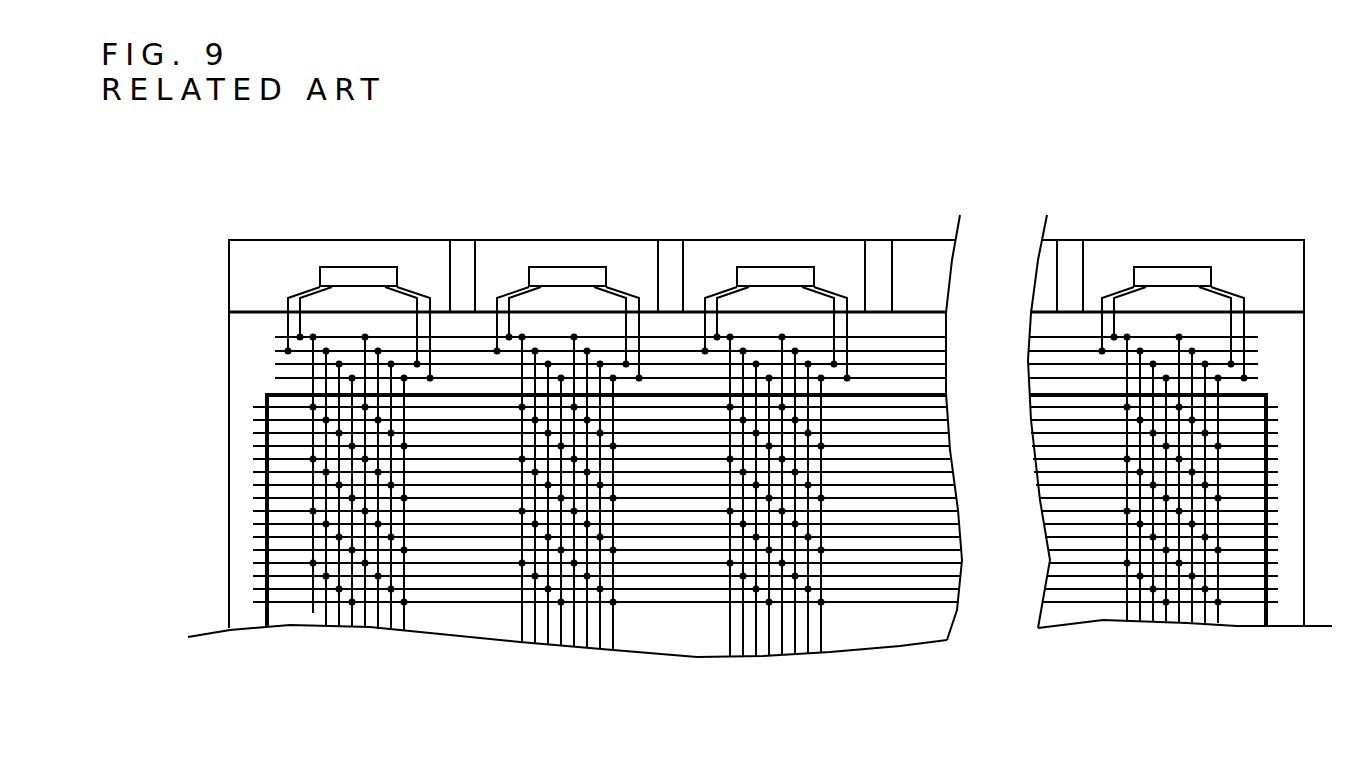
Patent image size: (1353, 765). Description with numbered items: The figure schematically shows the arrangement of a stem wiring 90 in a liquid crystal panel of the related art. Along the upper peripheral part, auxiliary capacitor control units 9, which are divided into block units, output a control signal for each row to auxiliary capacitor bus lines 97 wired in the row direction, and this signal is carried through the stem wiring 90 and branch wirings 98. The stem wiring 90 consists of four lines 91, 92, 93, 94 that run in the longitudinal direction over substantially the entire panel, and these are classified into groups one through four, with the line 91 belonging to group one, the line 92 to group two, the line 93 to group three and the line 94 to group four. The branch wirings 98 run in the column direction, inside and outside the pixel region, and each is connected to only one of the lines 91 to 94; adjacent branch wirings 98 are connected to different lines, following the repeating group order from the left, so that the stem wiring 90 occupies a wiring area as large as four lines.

The auxiliary capacitor control unit 9 is at (349, 266).
The stem wiring 90 is at (675, 356).
The line of group I 91 is at (275, 336).
The line of group II 92 is at (275, 351).
The line of group III 93 is at (275, 364).
The line of group IV 94 is at (720, 396).
The auxiliary capacitor bus line 97 is at (262, 418).
The branch wiring 98 is at (315, 612).